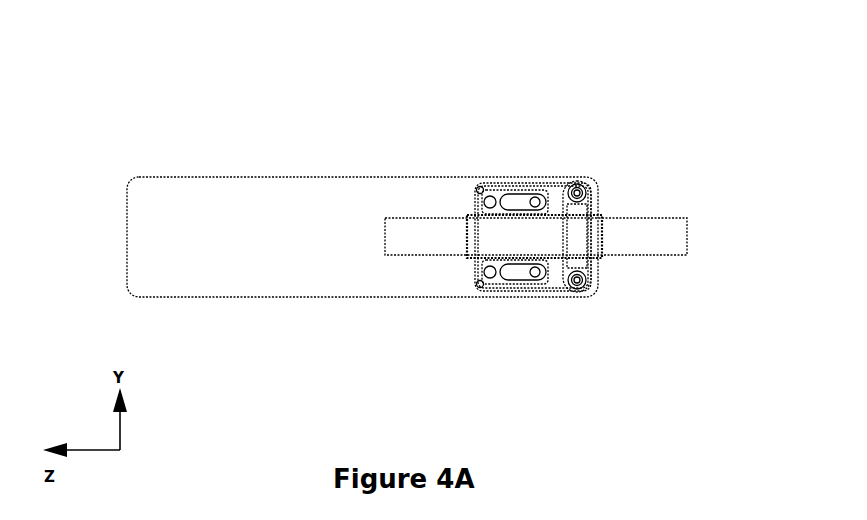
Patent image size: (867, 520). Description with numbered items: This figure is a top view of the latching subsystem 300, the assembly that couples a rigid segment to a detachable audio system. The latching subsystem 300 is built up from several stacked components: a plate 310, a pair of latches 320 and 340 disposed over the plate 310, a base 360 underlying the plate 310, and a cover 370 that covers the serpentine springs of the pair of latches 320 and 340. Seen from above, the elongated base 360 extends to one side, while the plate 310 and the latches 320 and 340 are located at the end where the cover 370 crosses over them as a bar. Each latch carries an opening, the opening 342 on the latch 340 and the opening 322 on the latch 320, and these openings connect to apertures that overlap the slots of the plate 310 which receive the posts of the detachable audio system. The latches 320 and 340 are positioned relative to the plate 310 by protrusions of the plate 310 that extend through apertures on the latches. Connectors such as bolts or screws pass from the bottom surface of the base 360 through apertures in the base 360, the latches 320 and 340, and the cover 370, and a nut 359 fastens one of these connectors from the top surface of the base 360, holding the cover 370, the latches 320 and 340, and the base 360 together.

The latching subsystem 300 is at (582, 98).
The plate 310 is at (561, 186).
The latch 320 is at (488, 284).
The opening 322 is at (520, 280).
The latch 340 is at (486, 190).
The opening 342 is at (523, 198).
The nut 359 is at (583, 188).
The base 360 is at (218, 275).
The cover 370 is at (675, 233).